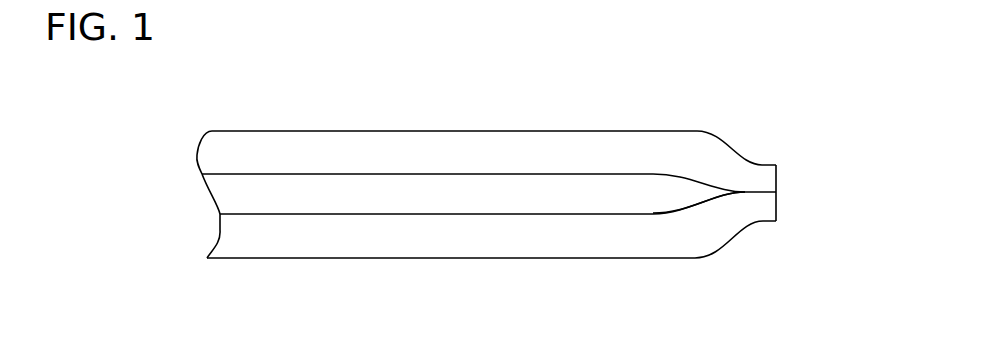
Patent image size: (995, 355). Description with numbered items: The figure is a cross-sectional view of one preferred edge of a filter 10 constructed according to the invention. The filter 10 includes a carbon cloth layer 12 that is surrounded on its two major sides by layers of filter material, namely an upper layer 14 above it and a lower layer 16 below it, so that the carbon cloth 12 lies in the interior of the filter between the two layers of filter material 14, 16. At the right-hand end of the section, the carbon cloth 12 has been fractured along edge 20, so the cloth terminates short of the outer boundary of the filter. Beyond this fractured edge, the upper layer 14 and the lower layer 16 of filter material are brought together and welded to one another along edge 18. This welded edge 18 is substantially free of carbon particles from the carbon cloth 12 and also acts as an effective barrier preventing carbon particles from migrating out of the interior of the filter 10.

The filter 10 is at (534, 178).
The carbon cloth layer 12 is at (293, 192).
The upper layer of filter material 14 is at (417, 155).
The lower layer of filter material 16 is at (368, 242).
The welded edge 18 is at (776, 192).
The fractured edge of carbon cloth 20 is at (692, 212).